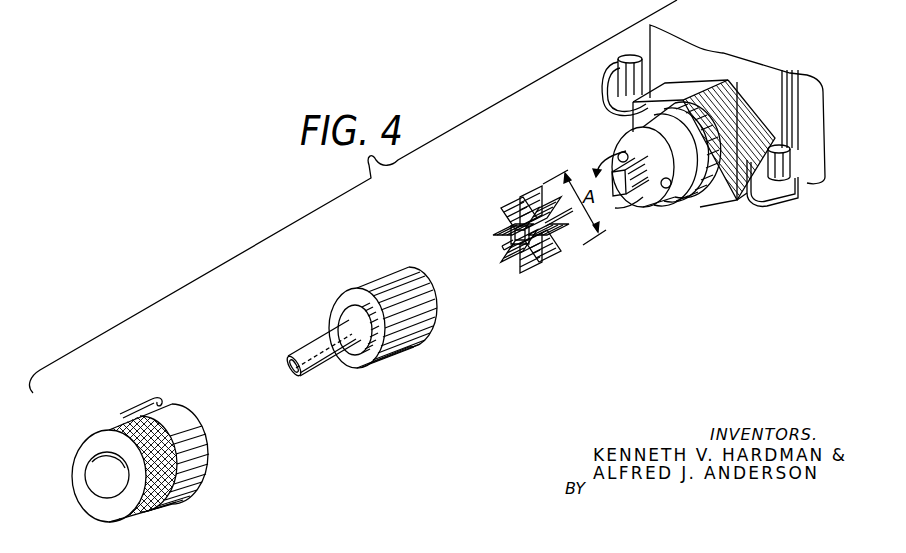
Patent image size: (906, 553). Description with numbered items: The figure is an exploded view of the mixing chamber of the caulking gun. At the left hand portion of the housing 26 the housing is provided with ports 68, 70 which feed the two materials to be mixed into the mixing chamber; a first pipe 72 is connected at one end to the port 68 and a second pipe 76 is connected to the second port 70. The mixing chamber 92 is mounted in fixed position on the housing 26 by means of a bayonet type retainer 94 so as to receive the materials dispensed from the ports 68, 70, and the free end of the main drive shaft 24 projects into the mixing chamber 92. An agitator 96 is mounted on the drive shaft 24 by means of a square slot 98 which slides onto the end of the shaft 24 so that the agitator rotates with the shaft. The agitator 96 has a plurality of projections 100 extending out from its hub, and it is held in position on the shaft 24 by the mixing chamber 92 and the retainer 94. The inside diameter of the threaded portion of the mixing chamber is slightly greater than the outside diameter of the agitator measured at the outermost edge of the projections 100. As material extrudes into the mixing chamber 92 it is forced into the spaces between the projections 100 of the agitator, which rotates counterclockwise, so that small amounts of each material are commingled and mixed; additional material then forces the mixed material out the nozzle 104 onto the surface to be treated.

The main drive shaft 24 is at (640, 198).
The housing 26 is at (742, 65).
The port 68 is at (666, 190).
The port 70 is at (620, 154).
The first pipe 72 is at (792, 153).
The second pipe 76 is at (633, 60).
The mixing chamber 92 is at (373, 372).
The bayonet type retainer 94 is at (128, 412).
The agitator 96 is at (504, 218).
The square slot 98 is at (511, 241).
The projections 100 is at (529, 195).
The nozzle 104 is at (303, 348).